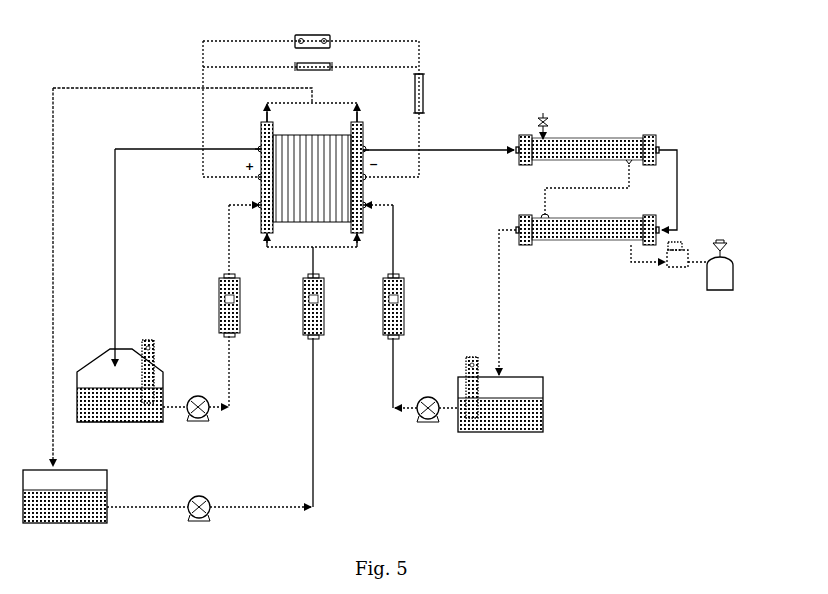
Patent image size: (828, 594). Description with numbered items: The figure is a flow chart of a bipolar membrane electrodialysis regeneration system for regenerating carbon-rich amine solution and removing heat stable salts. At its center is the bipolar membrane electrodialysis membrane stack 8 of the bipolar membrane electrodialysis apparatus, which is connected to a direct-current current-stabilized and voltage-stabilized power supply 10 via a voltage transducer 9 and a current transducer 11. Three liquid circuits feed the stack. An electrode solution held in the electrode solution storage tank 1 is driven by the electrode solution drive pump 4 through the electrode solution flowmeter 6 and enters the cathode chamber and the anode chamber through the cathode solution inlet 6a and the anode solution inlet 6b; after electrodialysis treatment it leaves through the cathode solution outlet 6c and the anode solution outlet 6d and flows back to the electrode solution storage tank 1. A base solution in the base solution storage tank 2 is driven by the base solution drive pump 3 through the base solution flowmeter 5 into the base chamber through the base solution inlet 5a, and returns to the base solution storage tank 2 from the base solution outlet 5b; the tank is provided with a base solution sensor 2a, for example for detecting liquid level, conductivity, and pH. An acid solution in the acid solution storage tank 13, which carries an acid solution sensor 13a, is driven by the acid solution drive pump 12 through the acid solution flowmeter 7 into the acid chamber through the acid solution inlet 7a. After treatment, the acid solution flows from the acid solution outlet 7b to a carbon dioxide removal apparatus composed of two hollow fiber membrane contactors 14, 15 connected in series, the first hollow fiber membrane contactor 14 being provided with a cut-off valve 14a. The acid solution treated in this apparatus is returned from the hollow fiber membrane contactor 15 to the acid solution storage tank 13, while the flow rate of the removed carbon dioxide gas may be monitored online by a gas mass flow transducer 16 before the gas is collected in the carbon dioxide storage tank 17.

The electrode solution storage tank 1 is at (27, 470).
The base solution storage tank 2 is at (93, 367).
The base solution sensor 2a is at (142, 339).
The base solution drive pump 3 is at (194, 398).
The electrode solution drive pump 4 is at (189, 500).
The base solution flowmeter 5 is at (221, 279).
The base solution inlet 5a is at (258, 213).
The base solution outlet 5b is at (258, 148).
The electrode solution flowmeter 6 is at (305, 279).
The cathode solution inlet 6a is at (355, 236).
The anode solution inlet 6b is at (270, 236).
The cathode solution outlet 6c is at (352, 119).
The anode solution outlet 6d is at (270, 118).
The acid solution flowmeter 7 is at (385, 279).
The acid solution inlet 7a is at (366, 212).
The acid solution outlet 7b is at (365, 147).
The bipolar membrane electrodialysis membrane stack 8 is at (259, 123).
The voltage transducer 9 is at (335, 67).
The direct-current current-stabilized and voltage-stabilized power supply 10 is at (312, 34).
The current transducer 11 is at (424, 81).
The acid solution drive pump 12 is at (422, 398).
The acid solution storage tank 13 is at (458, 381).
The acid solution sensor 13a is at (475, 356).
The hollow fiber membrane contactor 14 is at (523, 135).
The cut-off valve 14a is at (543, 112).
The hollow fiber membrane contactor 15 is at (520, 215).
The gas mass flow transducer 16 is at (688, 242).
The carbon dioxide storage tank 17 is at (707, 290).